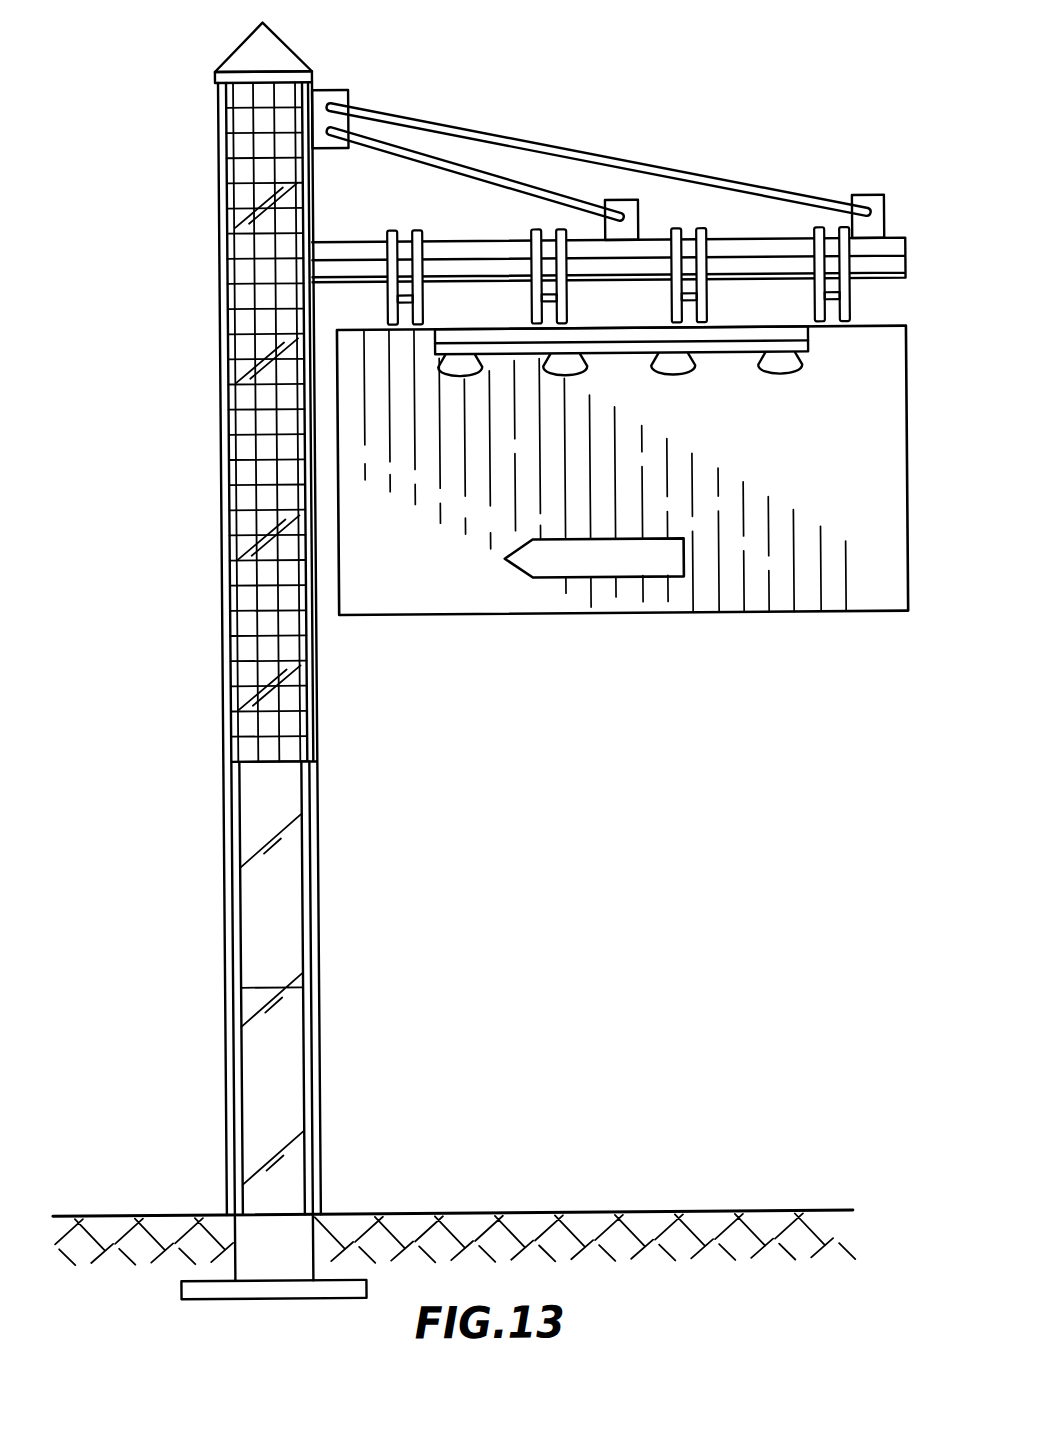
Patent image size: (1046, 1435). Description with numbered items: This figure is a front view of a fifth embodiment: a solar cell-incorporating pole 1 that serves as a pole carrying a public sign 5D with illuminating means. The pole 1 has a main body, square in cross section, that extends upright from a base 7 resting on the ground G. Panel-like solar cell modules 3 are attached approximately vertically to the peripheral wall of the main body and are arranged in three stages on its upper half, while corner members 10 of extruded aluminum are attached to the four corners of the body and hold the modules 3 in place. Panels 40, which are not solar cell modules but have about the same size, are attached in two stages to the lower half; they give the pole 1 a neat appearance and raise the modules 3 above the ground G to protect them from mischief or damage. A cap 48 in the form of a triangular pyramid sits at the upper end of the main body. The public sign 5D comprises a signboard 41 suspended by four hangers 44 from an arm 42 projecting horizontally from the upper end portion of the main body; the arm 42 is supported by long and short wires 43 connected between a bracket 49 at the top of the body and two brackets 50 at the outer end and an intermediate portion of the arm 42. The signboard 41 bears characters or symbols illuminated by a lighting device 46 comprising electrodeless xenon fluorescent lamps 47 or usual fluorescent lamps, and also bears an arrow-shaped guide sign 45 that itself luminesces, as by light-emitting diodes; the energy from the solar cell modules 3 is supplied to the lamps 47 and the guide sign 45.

The pole 1 is at (184, 153).
The solar cell modules 3 is at (248, 245).
The public sign 5D is at (829, 604).
The base 7 is at (338, 1284).
The corner members 10 is at (218, 781).
The panels 40 is at (273, 954).
The signboard 41 is at (488, 616).
The arm 42 is at (736, 241).
The wires 43 is at (493, 132).
The hangers 44 is at (527, 308).
The guide sign 45 is at (603, 563).
The lighting device 46 is at (808, 356).
The electrodeless xenon fluorescent lamps 47 is at (690, 378).
The cap 48 is at (263, 50).
The bracket 49 is at (348, 91).
The brackets 50 is at (623, 203).
The ground G is at (576, 1215).